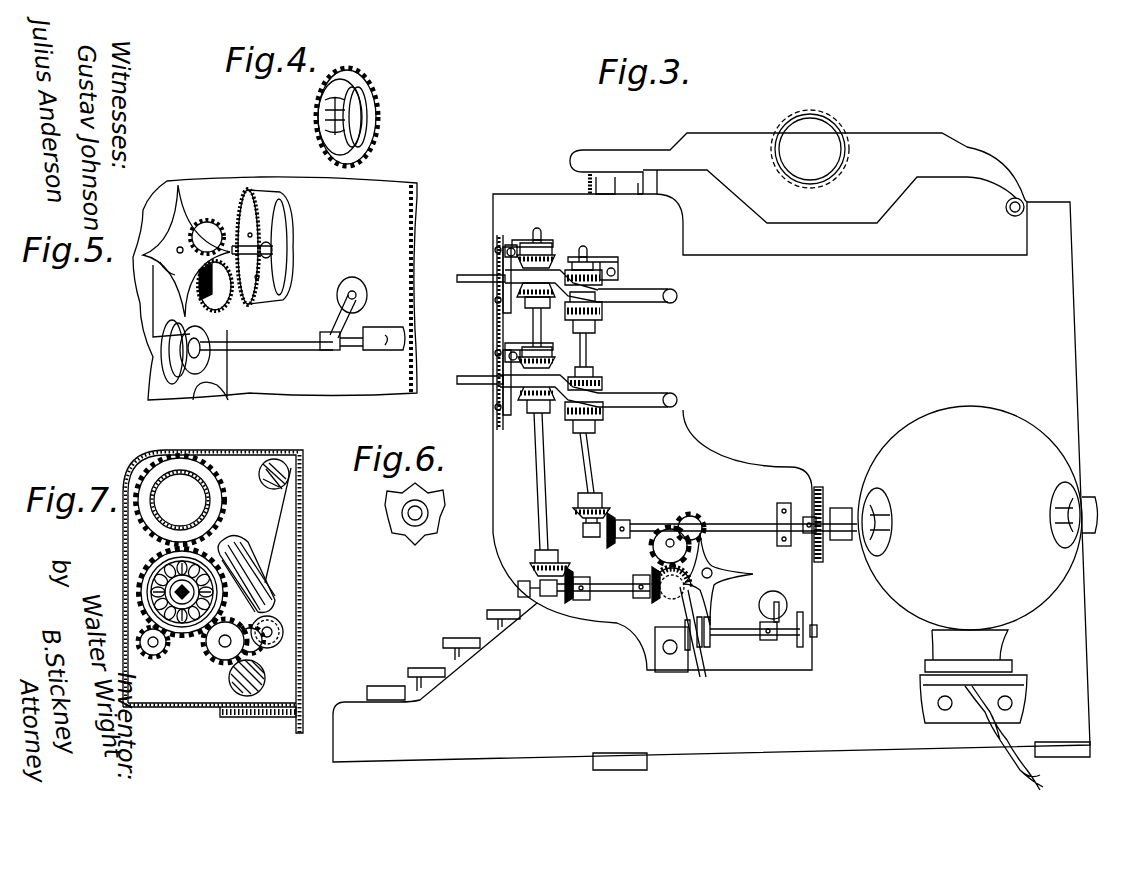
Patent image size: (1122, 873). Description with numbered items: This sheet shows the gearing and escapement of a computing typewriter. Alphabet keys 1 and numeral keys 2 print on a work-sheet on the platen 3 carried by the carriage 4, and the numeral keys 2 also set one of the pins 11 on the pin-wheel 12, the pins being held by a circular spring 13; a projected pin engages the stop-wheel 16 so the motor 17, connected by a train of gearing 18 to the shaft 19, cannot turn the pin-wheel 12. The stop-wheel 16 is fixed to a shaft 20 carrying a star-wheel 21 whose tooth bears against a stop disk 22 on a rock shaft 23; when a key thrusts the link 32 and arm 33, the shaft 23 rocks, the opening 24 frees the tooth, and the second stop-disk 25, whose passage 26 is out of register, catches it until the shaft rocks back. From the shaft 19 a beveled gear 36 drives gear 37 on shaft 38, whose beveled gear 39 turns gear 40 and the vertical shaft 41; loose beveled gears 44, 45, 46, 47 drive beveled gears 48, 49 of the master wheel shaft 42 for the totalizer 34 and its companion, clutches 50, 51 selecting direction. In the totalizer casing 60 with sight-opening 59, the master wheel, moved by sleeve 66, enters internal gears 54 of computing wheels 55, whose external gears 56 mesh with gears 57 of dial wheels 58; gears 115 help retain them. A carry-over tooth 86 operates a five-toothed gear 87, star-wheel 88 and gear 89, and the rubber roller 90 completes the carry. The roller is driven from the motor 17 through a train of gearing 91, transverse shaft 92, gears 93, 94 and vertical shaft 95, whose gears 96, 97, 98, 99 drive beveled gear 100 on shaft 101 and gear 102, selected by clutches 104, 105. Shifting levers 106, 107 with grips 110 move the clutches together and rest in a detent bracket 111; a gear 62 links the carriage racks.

In FIG. 3, the alphabet keys 1 is at (487, 613).
In FIG. 3, the numeral keys 2 is at (518, 590).
In FIG. 3, the platen 3 is at (826, 119).
In FIG. 3, the carriage 4 is at (877, 134).
In FIG. 5, the pins 11 is at (247, 292).
In FIG. 5, the pin-wheel 12 is at (270, 212).
In FIG. 5, the circular spring 13 is at (278, 245).
In FIG. 5, the stop-wheel 16 is at (280, 267).
In FIG. 3, the motor 17 is at (970, 412).
In FIG. 3, the train of gearing 18 is at (657, 565).
In FIG. 5, the train of gearing 18 is at (210, 220).
In FIG. 3, the shaft 19 is at (683, 632).
In FIG. 5, the shaft 19 is at (160, 268).
In FIG. 3, the shaft 20 is at (712, 574).
In FIG. 5, the shaft 20 is at (214, 224).
In FIG. 3, the star-wheel 21 is at (722, 590).
In FIG. 5, the star-wheel 21 is at (172, 249).
In FIG. 3, the stop disk 22 is at (712, 647).
In FIG. 5, the stop disk 22 is at (213, 362).
In FIG. 3, the rock shaft 23 is at (747, 637).
In FIG. 5, the rock shaft 23 is at (300, 352).
In FIG. 5, the opening 24 is at (205, 328).
In FIG. 3, the second stop-disk 25 is at (700, 652).
In FIG. 5, the second stop-disk 25 is at (163, 353).
In FIG. 5, the opening or passage 26 is at (198, 292).
In FIG. 3, the link 32 is at (776, 600).
In FIG. 5, the link 32 is at (360, 290).
In FIG. 3, the arm 33 is at (770, 622).
In FIG. 5, the arm 33 is at (340, 316).
In FIG. 7, the totalizer 34 is at (300, 567).
In FIG. 3, the beveled gear 36 is at (682, 530).
In FIG. 5, the beveled gear 36 is at (200, 222).
In FIG. 3, the gear 37 is at (655, 603).
In FIG. 3, the shaft 38 is at (615, 593).
In FIG. 3, the beveled gear 39 is at (570, 581).
In FIG. 3, the gear 40 is at (530, 563).
In FIG. 3, the vertical shaft 41 is at (536, 480).
In FIG. 7, the master wheel shaft 42 is at (160, 603).
In FIG. 3, the beveled gear 44 is at (545, 260).
In FIG. 3, the beveled gear 45 is at (520, 303).
In FIG. 3, the beveled gear 46 is at (548, 366).
In FIG. 3, the beveled gear 47 is at (522, 410).
In FIG. 3, the beveled gear 48 is at (511, 248).
In FIG. 3, the beveled gear 49 is at (505, 355).
In FIG. 3, the clutch 50 is at (503, 300).
In FIG. 3, the clutch 51 is at (503, 400).
In FIG. 4, the internal gears 54 is at (325, 112).
In FIG. 7, the internal gears 54 is at (222, 546).
In FIG. 4, the computing wheels 55 is at (373, 73).
In FIG. 7, the computing wheels 55 is at (165, 593).
In FIG. 4, the external gears 56 is at (380, 122).
In FIG. 7, the external gears 56 is at (143, 570).
In FIG. 7, the gears 57 is at (226, 493).
In FIG. 7, the dial wheels 58 is at (180, 472).
In FIG. 7, the sight-opening 59 is at (145, 456).
In FIG. 7, the totalizer casing 60 is at (243, 450).
In FIG. 3, the gear 62 is at (587, 188).
In FIG. 7, the sleeve 66 is at (168, 565).
In FIG. 4, the carry-over tooth 86 is at (378, 93).
In FIG. 7, the carry-over tooth 86 is at (182, 640).
In FIG. 6, the five-toothed gear 87 is at (440, 519).
In FIG. 6, the five toothed star-wheel 88 is at (440, 505).
In FIG. 7, the five toothed star-wheel 88 is at (208, 660).
In FIG. 7, the gear 89 is at (238, 650).
In FIG. 7, the assisting or boosting rubber roller 90 is at (265, 684).
In FIG. 3, the train of gearing 91 is at (820, 486).
In FIG. 3, the transverse shaft 92 is at (757, 524).
In FIG. 3, the gear 93 is at (618, 520).
In FIG. 3, the gear 94 is at (596, 498).
In FIG. 3, the vertical shaft 95 is at (581, 477).
In FIG. 3, the gear 96 is at (592, 262).
In FIG. 3, the gear 97 is at (602, 312).
In FIG. 3, the gear 98 is at (598, 378).
In FIG. 3, the gear 99 is at (603, 422).
In FIG. 3, the beveled gear 100 is at (604, 285).
In FIG. 7, the shaft 101 is at (262, 680).
In FIG. 3, the gear 102 is at (545, 418).
In FIG. 3, the clutch 104 is at (540, 312).
In FIG. 3, the clutch 105 is at (608, 392).
In FIG. 3, the shifting lever 106 is at (647, 303).
In FIG. 3, the shifting lever 107 is at (650, 408).
In FIG. 3, the grip 110 is at (470, 275).
In FIG. 3, the detent bracket 111 is at (497, 245).
In FIG. 7, the gears 115 is at (152, 658).